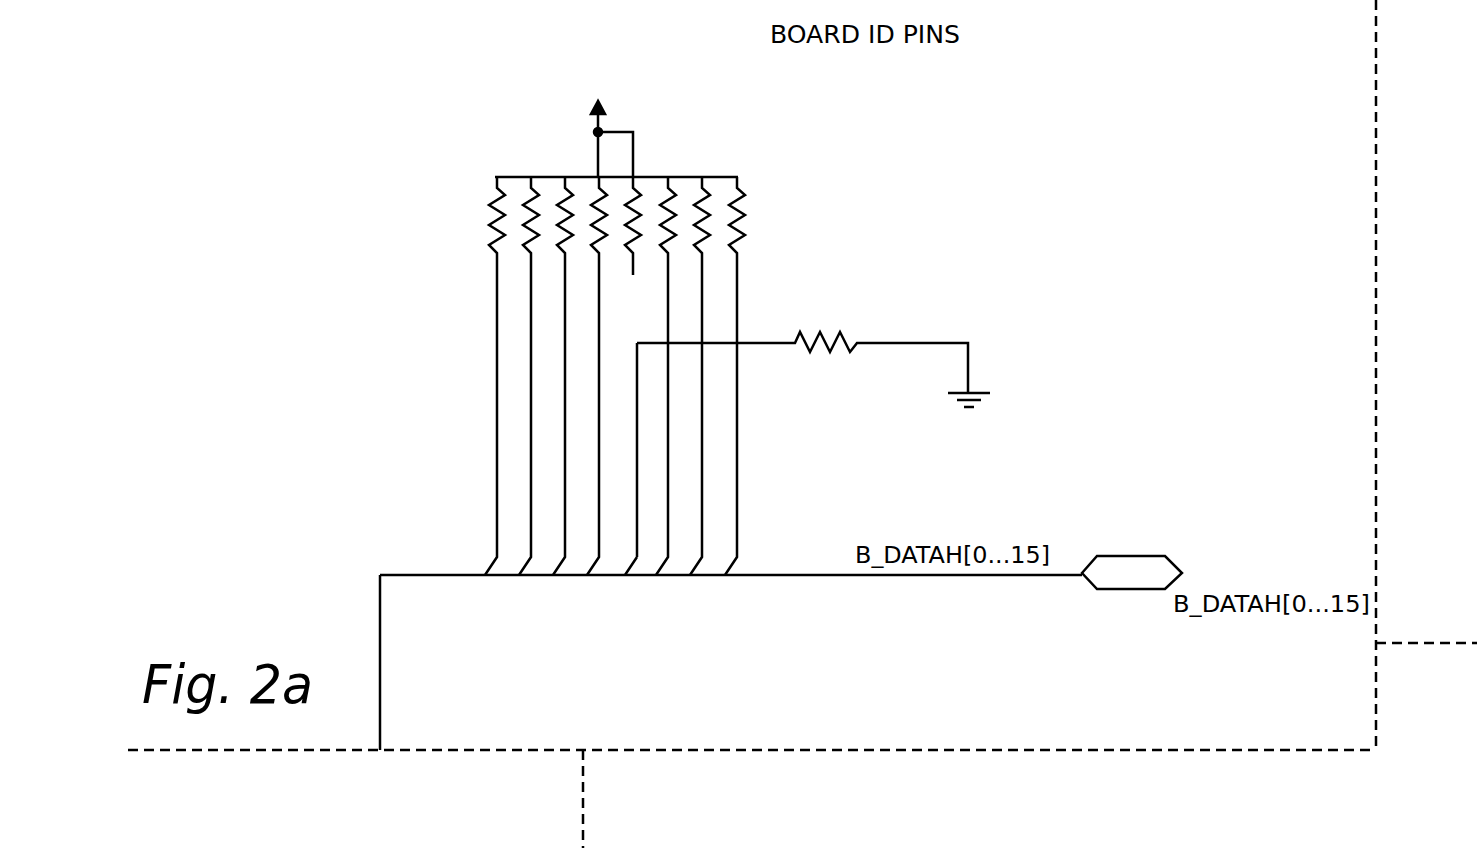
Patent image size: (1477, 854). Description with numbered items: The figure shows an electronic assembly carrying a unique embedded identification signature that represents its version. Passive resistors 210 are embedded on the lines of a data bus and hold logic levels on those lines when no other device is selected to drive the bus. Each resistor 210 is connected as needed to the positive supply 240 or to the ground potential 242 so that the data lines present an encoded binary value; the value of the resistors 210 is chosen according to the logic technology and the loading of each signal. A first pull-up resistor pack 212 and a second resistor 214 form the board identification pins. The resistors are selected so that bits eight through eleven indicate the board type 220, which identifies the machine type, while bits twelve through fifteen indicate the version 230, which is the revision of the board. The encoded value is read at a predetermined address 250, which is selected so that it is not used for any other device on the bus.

The passive resistors 210 is at (462, 170).
The resistor R62 212 is at (810, 227).
The resistor R63 214 is at (960, 310).
The board type 220 is at (1167, 62).
The version 230 is at (1200, 97).
The positive supply 240 is at (635, 75).
The ground potential 242 is at (1010, 406).
The predetermined address 250 is at (1257, 130).